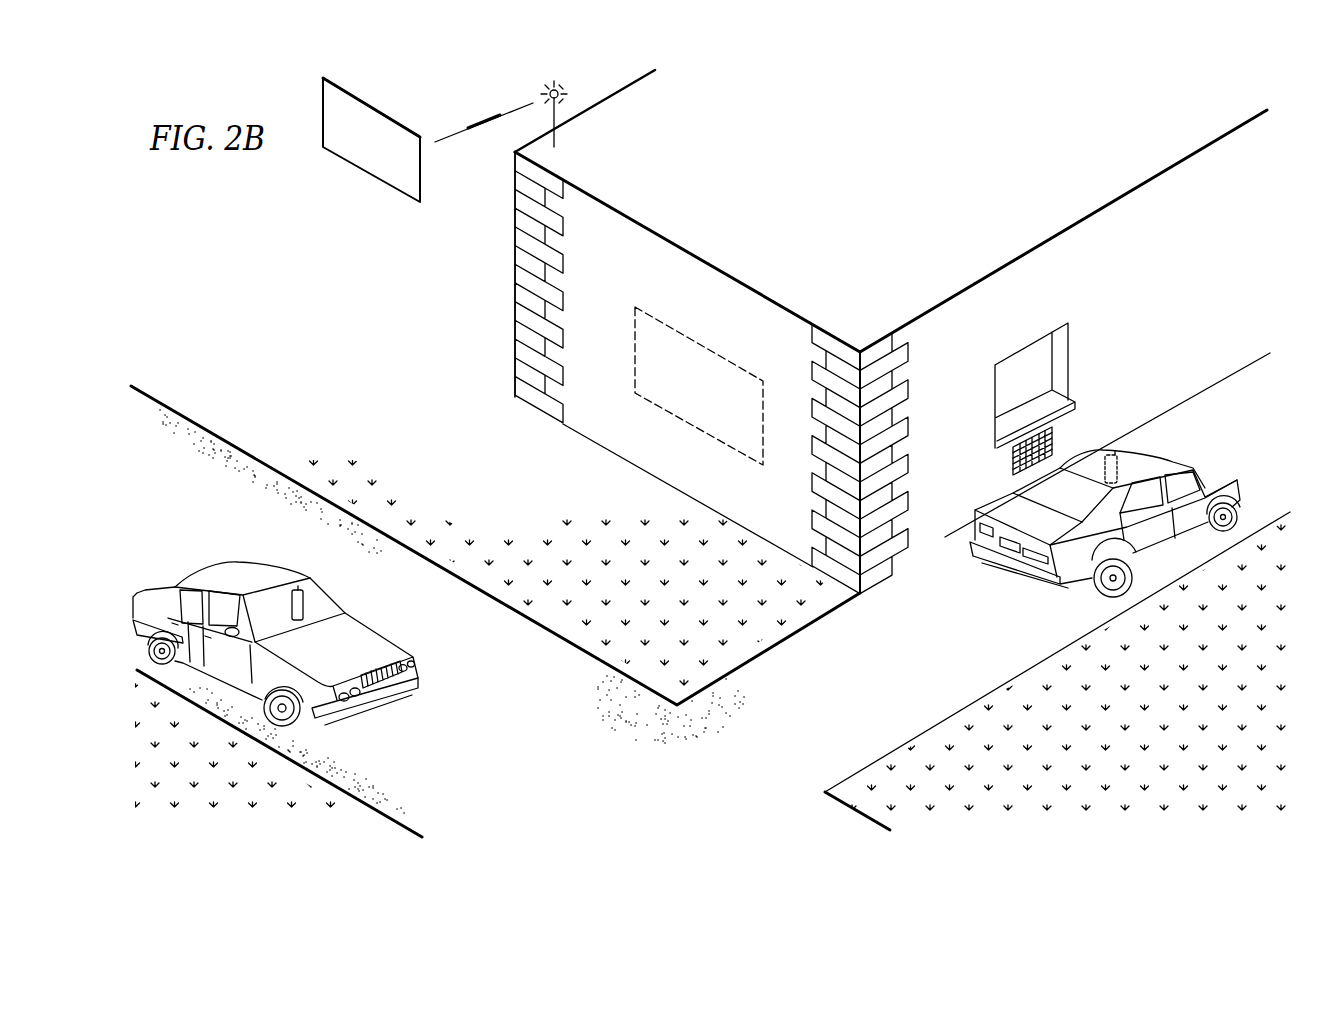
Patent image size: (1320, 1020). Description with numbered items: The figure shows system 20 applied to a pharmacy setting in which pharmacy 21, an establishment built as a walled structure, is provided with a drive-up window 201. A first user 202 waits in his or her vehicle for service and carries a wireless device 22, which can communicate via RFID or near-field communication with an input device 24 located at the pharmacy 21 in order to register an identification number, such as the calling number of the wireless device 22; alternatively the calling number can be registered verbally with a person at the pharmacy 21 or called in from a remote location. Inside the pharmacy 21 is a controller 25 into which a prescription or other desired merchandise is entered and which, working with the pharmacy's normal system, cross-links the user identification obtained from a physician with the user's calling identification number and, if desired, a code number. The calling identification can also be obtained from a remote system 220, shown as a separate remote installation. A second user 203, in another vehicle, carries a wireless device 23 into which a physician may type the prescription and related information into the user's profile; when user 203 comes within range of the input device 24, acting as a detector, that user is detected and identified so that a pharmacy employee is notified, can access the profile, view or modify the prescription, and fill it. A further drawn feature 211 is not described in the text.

The system 20 is at (237, 293).
The pharmacy 21 is at (863, 332).
The wireless device 22 is at (1118, 463).
The wireless device 23 is at (306, 603).
The input device 24 is at (1052, 435).
The controller 25 is at (645, 338).
The drive-up window 201 is at (1040, 368).
The user 202 is at (1106, 510).
The user 203 is at (275, 624).
The curb 211 is at (228, 455).
The remote system 220 is at (378, 111).